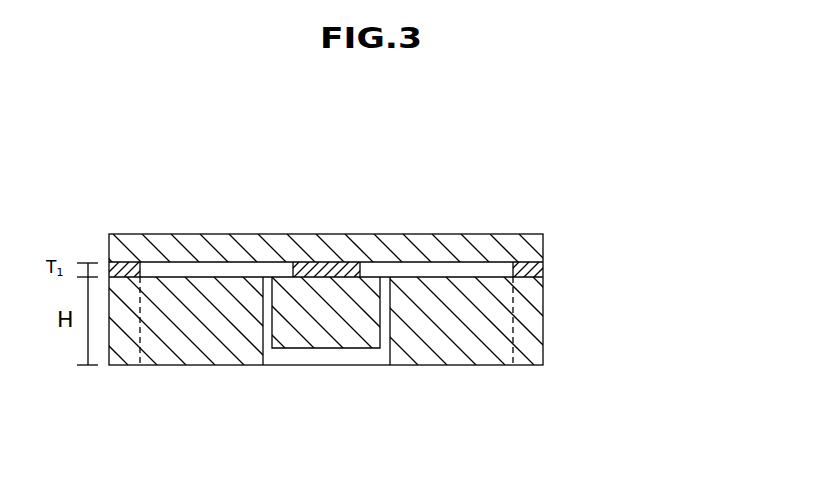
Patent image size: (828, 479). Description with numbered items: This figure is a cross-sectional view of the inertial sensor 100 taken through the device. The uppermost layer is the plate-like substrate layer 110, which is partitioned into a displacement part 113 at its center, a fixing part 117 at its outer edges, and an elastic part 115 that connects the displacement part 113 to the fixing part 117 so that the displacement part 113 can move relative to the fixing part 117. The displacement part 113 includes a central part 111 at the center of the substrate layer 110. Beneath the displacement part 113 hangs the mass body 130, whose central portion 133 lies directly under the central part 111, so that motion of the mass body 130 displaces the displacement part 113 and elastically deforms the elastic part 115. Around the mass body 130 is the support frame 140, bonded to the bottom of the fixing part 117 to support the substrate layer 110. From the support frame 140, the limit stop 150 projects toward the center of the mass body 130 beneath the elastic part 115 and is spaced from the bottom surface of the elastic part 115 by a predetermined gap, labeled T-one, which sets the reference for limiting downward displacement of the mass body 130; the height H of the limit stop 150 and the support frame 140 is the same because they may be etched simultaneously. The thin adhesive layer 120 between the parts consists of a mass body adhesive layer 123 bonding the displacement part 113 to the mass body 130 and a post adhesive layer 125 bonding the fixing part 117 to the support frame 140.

The inertial sensor 100 is at (183, 128).
The substrate layer 110 is at (339, 257).
The central part 111 is at (364, 246).
The displacement part 113 is at (339, 257).
The elastic part 115 is at (448, 246).
The fixing part 117 is at (519, 250).
The adhesive layer 120 is at (392, 252).
The mass body adhesive layer 123 is at (305, 262).
The post adhesive layer 125 is at (544, 271).
The mass body 130 is at (339, 347).
The central portion 133 is at (335, 332).
The support frame 140 is at (528, 352).
The limit stop 150 is at (457, 333).